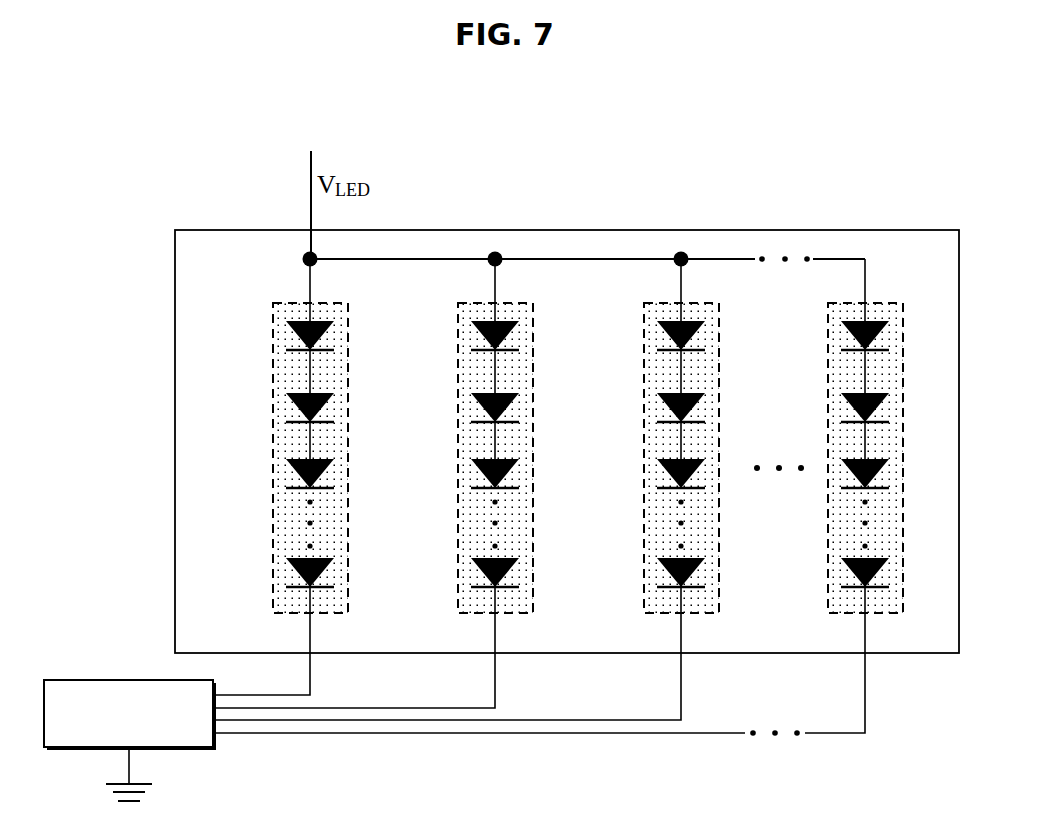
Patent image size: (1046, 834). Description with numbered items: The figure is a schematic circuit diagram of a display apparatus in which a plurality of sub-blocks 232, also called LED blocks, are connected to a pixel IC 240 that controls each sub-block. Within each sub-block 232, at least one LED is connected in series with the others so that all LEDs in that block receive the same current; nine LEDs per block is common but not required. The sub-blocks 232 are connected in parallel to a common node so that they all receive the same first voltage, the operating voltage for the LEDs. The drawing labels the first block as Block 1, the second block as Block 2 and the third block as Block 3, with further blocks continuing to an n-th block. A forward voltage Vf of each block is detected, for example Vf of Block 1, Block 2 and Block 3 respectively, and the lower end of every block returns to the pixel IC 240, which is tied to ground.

The sub-block 232 is at (567, 420).
The pixel IC 240 is at (97, 678).
The LED block 1 (Block1) 1 is at (270, 436).
The LED block 2 (Block2) 2 is at (454, 436).
The LED block 3 (Block3) 3 is at (640, 436).